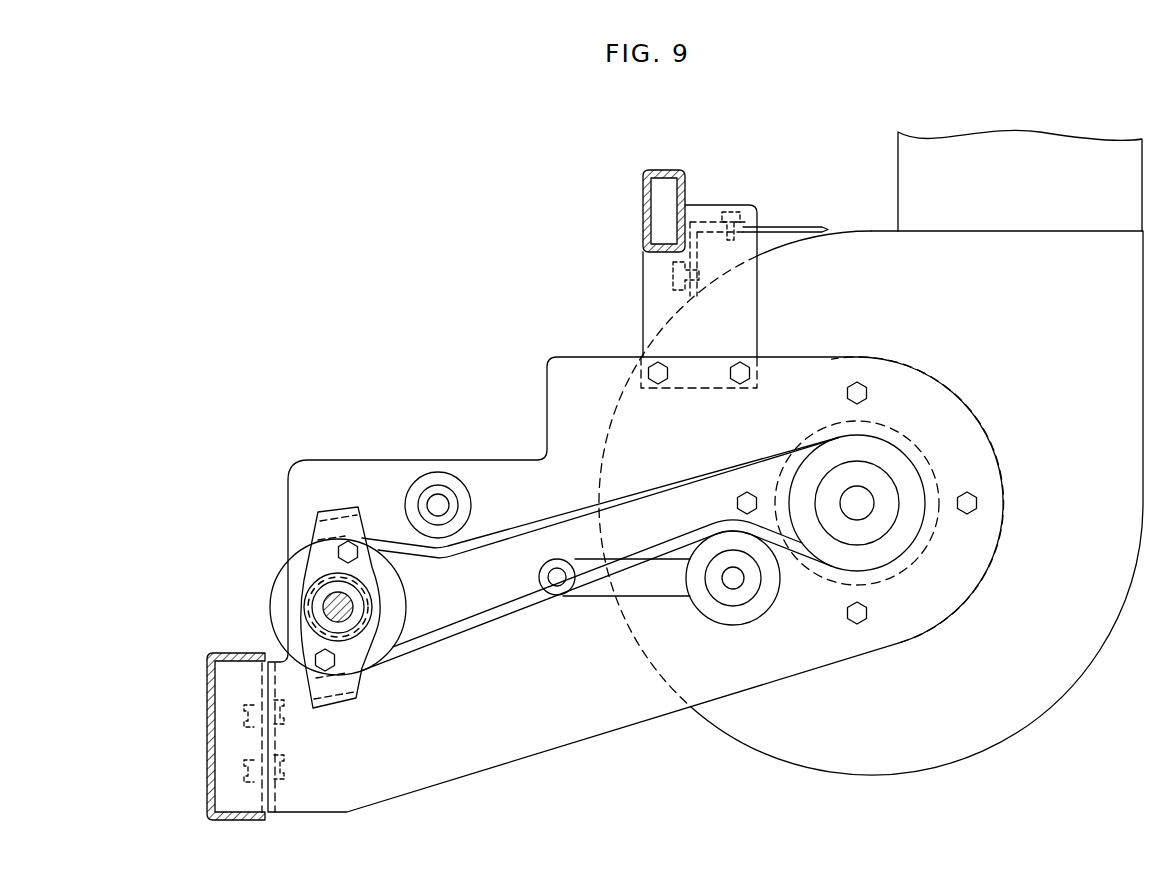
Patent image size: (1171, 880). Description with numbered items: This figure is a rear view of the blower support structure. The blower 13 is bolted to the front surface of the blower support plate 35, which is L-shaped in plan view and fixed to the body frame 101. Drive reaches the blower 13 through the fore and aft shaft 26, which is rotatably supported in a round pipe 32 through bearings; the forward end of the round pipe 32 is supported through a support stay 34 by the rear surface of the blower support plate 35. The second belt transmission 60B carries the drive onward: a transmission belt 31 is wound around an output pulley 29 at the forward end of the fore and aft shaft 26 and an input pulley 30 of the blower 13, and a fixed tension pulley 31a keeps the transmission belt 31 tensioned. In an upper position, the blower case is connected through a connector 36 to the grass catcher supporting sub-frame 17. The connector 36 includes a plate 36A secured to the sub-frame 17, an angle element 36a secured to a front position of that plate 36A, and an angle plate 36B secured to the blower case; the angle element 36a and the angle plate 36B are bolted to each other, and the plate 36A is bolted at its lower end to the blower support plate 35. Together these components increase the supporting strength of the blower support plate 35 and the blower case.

The blower 13 is at (1060, 683).
The grass catcher supporting sub-frame 17 is at (655, 170).
The fore and aft shaft 26 is at (325, 607).
The output pulley 29 is at (385, 633).
The input pulley 30 is at (905, 470).
The transmission belt 31 is at (654, 490).
The fixed tension pulley 31a is at (730, 618).
The round pipe 32 is at (318, 590).
The support stay 34 is at (343, 507).
The blower support plate 35 is at (556, 740).
The connector 36 is at (762, 220).
The plate 36A is at (645, 297).
The angle element 36a is at (700, 212).
The angle plate 36B is at (790, 226).
The second belt transmission 60B is at (531, 512).
The body frame 101 is at (207, 731).